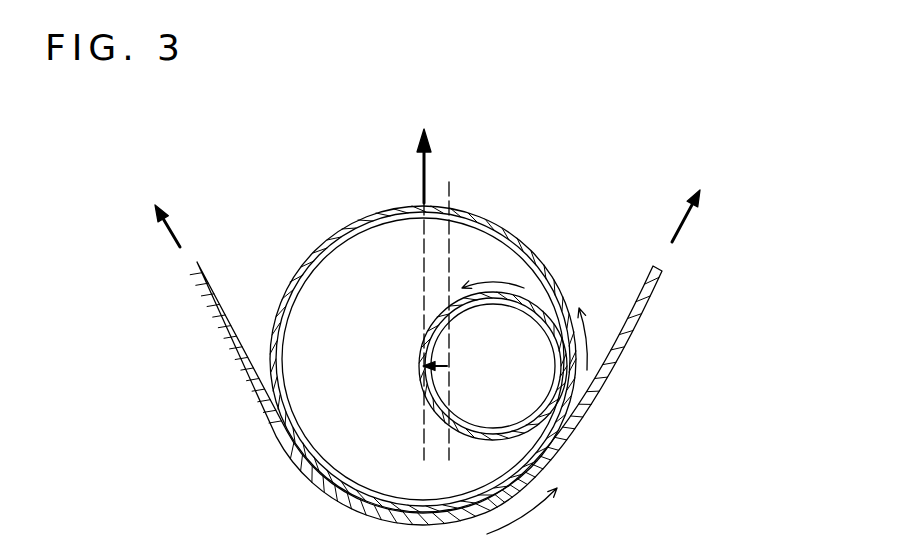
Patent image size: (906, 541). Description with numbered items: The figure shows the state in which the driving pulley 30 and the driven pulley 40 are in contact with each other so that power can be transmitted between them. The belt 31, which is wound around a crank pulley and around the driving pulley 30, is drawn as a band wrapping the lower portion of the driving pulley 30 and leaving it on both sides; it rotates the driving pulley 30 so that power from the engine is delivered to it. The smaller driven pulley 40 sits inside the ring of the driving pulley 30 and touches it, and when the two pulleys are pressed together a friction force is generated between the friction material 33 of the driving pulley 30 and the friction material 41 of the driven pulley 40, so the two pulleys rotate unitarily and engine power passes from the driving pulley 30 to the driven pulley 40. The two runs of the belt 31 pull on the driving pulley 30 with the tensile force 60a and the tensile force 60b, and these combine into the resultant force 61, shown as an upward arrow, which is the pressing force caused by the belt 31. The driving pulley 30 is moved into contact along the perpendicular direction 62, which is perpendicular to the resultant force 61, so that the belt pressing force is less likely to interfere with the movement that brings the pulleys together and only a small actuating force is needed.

The driving pulley 30 is at (347, 224).
The belt 31 is at (188, 301).
The friction material 33 is at (510, 240).
The driven pulley 40 is at (431, 303).
The friction material 41 is at (537, 303).
The tensile force 60a is at (692, 226).
The tensile force 60b is at (155, 211).
The resultant force 61 is at (427, 167).
The perpendicular direction 62 is at (426, 391).